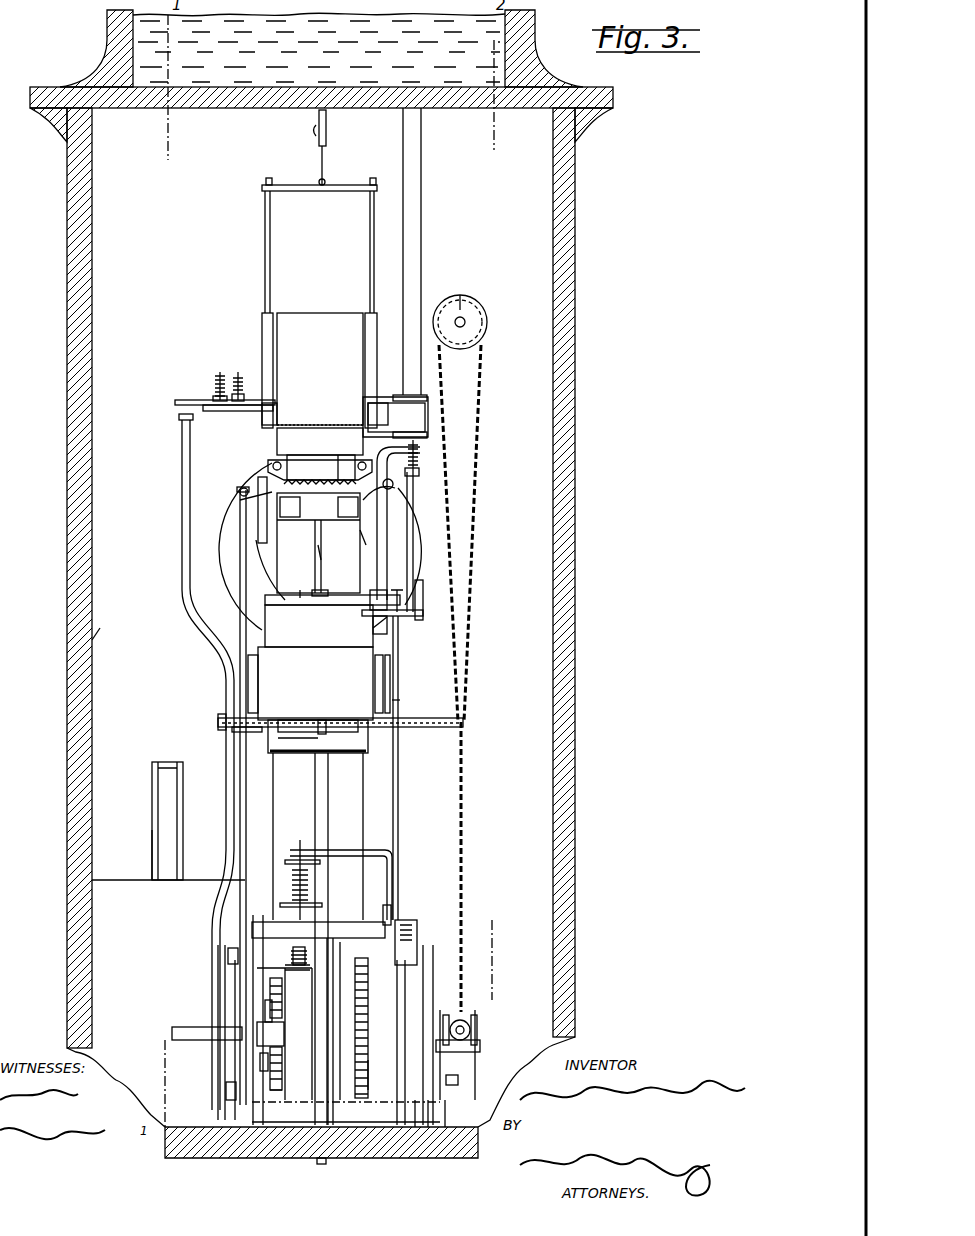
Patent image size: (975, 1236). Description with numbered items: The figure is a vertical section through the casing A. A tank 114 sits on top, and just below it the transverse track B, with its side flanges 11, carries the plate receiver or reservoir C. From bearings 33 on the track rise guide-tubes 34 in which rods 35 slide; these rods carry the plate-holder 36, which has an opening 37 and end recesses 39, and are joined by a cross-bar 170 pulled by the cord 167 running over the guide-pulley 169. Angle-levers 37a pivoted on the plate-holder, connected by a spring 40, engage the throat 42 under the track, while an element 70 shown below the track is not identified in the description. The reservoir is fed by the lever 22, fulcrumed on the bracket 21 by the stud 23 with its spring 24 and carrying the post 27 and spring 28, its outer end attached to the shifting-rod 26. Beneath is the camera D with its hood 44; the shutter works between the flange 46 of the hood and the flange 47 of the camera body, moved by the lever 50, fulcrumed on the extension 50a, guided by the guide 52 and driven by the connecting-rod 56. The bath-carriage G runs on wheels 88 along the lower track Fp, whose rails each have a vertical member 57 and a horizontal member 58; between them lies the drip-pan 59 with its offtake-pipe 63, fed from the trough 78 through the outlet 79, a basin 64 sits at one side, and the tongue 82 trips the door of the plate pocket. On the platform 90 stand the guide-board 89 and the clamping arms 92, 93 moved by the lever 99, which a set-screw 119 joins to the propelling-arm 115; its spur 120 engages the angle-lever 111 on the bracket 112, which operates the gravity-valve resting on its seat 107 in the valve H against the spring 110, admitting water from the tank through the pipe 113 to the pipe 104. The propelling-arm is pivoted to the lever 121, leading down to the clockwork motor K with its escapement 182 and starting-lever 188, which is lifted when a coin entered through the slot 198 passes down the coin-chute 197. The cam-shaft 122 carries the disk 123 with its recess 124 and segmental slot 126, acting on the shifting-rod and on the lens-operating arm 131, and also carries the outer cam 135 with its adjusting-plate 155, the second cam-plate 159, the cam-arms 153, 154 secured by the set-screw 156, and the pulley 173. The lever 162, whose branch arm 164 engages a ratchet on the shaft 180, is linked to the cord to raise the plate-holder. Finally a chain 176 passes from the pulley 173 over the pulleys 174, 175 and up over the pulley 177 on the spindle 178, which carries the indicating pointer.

The water in tank 114 is at (319, 48).
The hook 169 is at (327, 131).
The suspension link 167 is at (324, 165).
The cross head 170 is at (305, 192).
The suspension rods 35 is at (270, 258).
The guide rod 113 is at (422, 258).
The pulley 178 is at (458, 316).
The pulley bracket 177 is at (489, 299).
The chain 176 is at (470, 560).
The rod sleeves 34 is at (273, 358).
The cylinder C is at (320, 369).
The valve chamber B is at (320, 428).
The valve casing 70 is at (294, 436).
The valve stem 42 is at (335, 456).
The brackets 33 is at (277, 410).
The pipe 11 is at (358, 428).
The valve box H is at (395, 416).
The spring 110 is at (420, 455).
The stop 112 is at (419, 470).
The roller 37 is at (394, 486).
The roller 37a is at (273, 466).
The cross bar 36 is at (320, 470).
The rack 40 is at (320, 489).
The float chamber D is at (318, 543).
The side chambers 39 is at (319, 509).
The lever 44 is at (359, 531).
The partition 89 is at (331, 553).
The stem 92 is at (298, 590).
The collar 93 is at (328, 584).
The pawl 52 is at (258, 527).
The lever 50 is at (240, 502).
The lever arm 50a is at (390, 505).
The segment arm 47 is at (232, 580).
The arm 46 is at (270, 580).
The rod 104 is at (406, 548).
The block 107 is at (380, 592).
The pin 119 is at (399, 595).
The bar 111 is at (423, 598).
The bracket 120 is at (423, 616).
The plate 99 is at (332, 599).
The casing 90 is at (305, 612).
The measuring vessel G is at (315, 670).
The catch 115 is at (373, 632).
The guides 88 is at (248, 688).
The frame F' Fp is at (408, 693).
The cross bar 64 is at (450, 718).
The bolts 57 is at (232, 730).
The tray 59 is at (318, 736).
The valve 78 is at (322, 720).
The plate 82 is at (345, 728).
The seat 79 is at (298, 741).
The rods 58 is at (273, 760).
The pipe 63 is at (315, 828).
The rod 121 is at (398, 812).
The spring 182 is at (290, 888).
The post 164 is at (383, 912).
The block 162 is at (405, 920).
The rod 56 is at (240, 620).
The lever rod 26 is at (182, 506).
The plate 22 is at (175, 402).
The bar 21 is at (240, 411).
The spring 23 is at (211, 375).
The nut 24 is at (213, 385).
The spring 27 is at (244, 375).
The nut 28 is at (248, 388).
The box 198 is at (152, 770).
The wall 197 is at (150, 834).
The casing A is at (105, 625).
The gear frame K is at (346, 1020).
The bar 124 is at (218, 958).
The block 126 is at (245, 962).
The spring 188 is at (293, 960).
The gear 131 is at (355, 1010).
The gear 122 is at (355, 1045).
The shaft 153 is at (368, 1064).
The pin 180 is at (275, 1092).
The pin 123 is at (226, 1092).
The rod 159 is at (433, 1000).
The pulley 173 is at (470, 1025).
The flanges 175 is at (477, 1026).
The shaft 174 is at (480, 1046).
The bolt 156 is at (458, 1080).
The rod 154 is at (415, 1127).
The rod 135 is at (428, 1127).
The rod 155 is at (445, 1127).